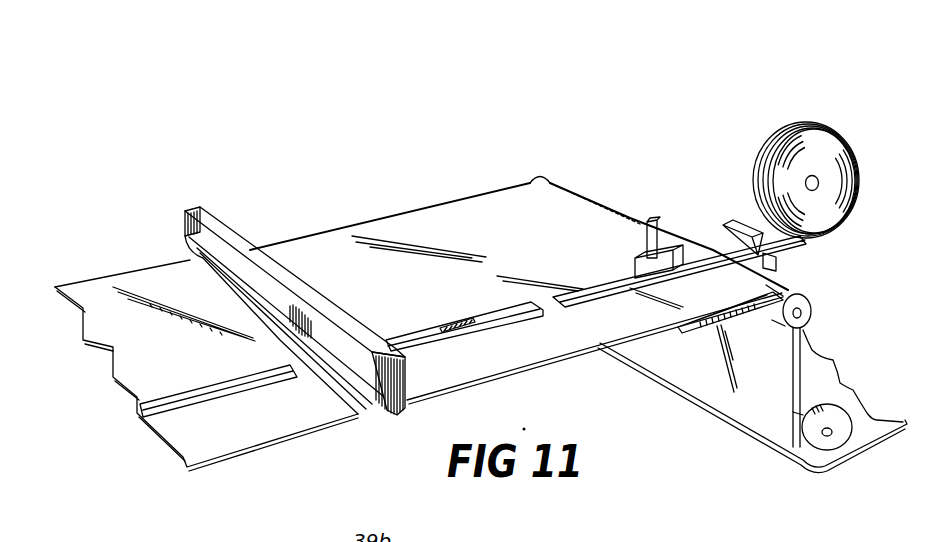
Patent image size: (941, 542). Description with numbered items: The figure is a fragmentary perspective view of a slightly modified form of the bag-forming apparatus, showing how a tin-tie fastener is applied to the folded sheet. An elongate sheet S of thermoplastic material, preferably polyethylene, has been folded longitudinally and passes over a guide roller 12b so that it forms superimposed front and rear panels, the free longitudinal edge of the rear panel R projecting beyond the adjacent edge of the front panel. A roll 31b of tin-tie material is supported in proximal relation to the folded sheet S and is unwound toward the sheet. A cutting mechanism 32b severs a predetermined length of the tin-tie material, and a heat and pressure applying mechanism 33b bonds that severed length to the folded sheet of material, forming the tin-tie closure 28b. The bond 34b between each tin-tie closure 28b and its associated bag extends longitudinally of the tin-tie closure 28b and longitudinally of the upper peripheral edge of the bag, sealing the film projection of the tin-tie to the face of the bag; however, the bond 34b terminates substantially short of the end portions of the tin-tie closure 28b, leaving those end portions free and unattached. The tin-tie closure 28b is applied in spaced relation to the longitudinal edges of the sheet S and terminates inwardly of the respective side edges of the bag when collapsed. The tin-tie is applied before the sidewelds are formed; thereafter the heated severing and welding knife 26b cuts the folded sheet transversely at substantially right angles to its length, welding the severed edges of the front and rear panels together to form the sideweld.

The heated severing and welding knife 26b is at (195, 210).
The tin-tie closure 28b is at (398, 336).
The bond 34b is at (462, 317).
The heat and pressure applying mechanism 33b is at (663, 253).
The cutting mechanism 32b is at (728, 221).
The roll of tin-tie material 31b is at (840, 143).
The guide roller 12b is at (802, 303).
The sheet of thermoplastic material S is at (840, 392).
The rear panel R is at (522, 353).